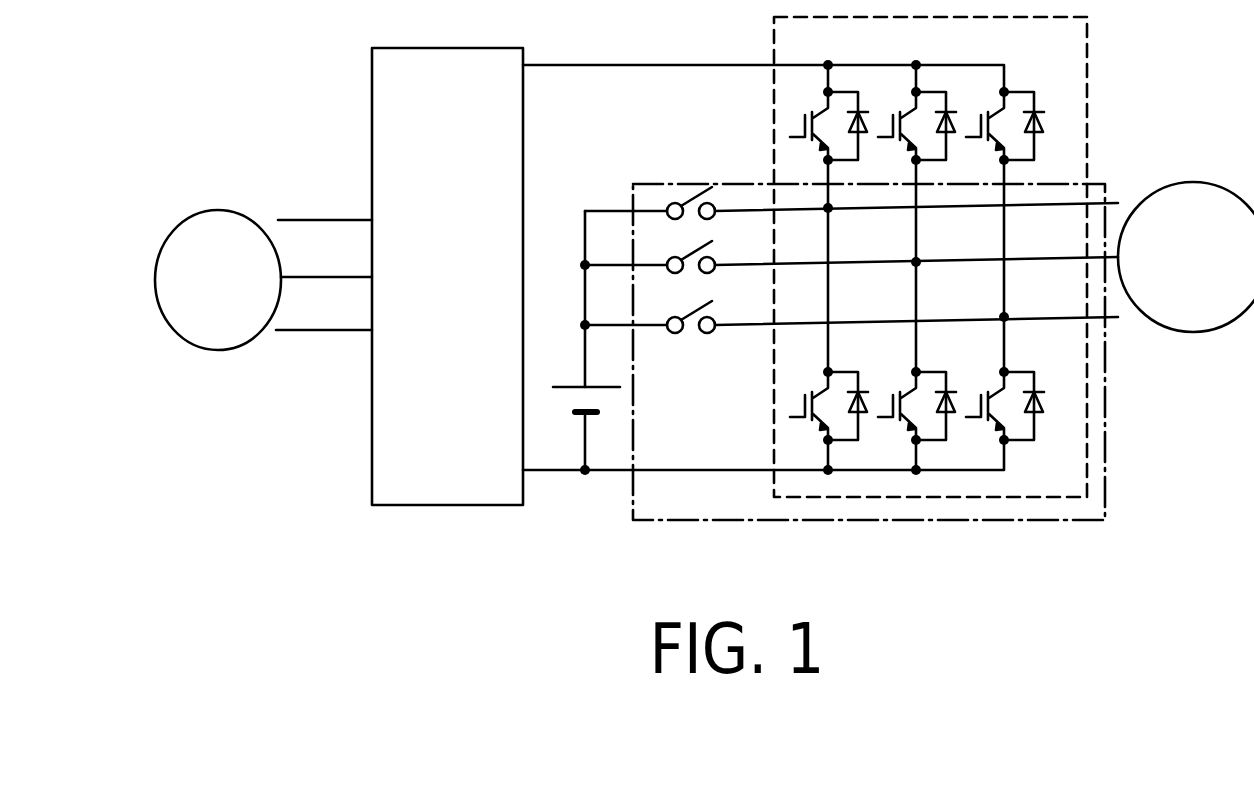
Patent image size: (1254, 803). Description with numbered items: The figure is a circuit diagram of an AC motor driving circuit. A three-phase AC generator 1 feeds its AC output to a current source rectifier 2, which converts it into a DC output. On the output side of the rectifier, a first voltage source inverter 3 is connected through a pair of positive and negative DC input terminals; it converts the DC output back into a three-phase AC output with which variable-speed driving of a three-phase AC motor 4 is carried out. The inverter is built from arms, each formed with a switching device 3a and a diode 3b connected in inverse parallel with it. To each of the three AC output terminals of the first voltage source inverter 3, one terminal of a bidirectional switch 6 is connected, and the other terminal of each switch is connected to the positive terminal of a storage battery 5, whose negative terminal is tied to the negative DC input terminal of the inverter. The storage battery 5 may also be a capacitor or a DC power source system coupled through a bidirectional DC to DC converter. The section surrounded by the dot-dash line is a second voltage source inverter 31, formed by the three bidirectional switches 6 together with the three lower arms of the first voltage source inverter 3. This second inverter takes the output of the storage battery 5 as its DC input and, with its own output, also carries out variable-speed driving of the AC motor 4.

The three-phase AC generator 1 is at (218, 280).
The current source rectifier 2 is at (447, 276).
The first voltage source inverter 3 is at (930, 257).
The switching device 3a is at (895, 256).
The diode 3b is at (951, 266).
The three-phase AC motor 4 is at (1186, 257).
The storage battery 5 is at (586, 378).
The bidirectional switch 6 is at (677, 277).
The second voltage source inverter 31 is at (1105, 380).